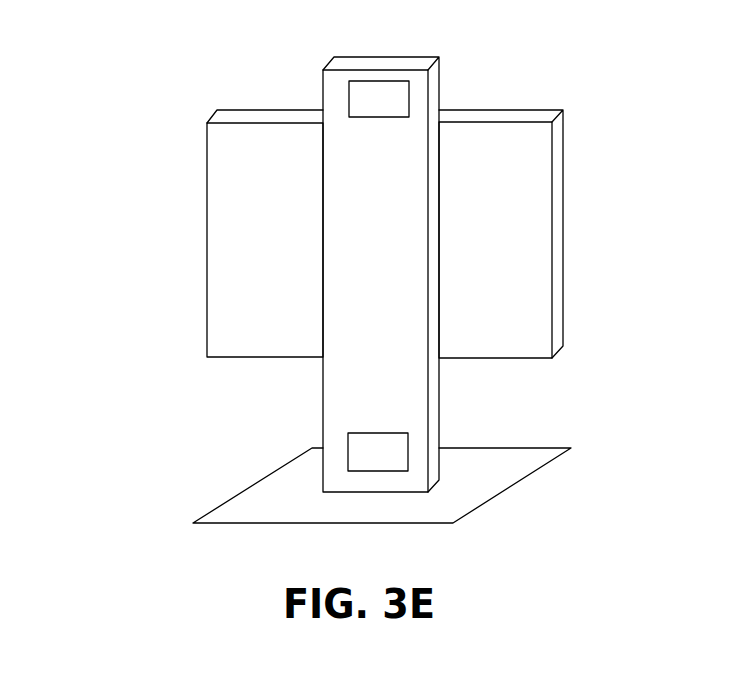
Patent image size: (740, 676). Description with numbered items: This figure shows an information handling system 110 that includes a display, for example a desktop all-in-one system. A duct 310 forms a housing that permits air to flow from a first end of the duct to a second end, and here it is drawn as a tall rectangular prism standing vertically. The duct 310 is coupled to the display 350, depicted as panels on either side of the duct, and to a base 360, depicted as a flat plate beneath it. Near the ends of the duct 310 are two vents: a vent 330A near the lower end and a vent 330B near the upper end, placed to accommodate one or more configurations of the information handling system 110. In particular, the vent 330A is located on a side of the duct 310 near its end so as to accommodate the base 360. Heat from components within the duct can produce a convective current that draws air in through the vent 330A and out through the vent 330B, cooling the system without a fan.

The information handling system 110 is at (118, 145).
The duct 310 is at (323, 422).
The vent 330A is at (379, 433).
The vent 330B is at (378, 81).
The display 350 is at (562, 237).
The base 360 is at (220, 502).